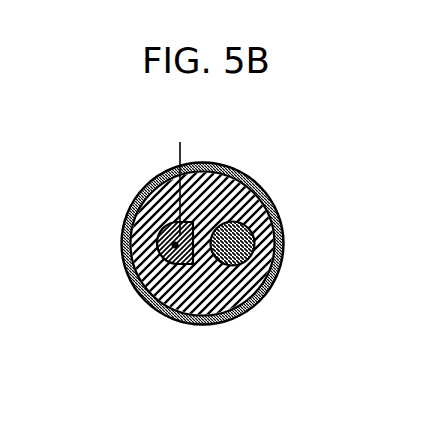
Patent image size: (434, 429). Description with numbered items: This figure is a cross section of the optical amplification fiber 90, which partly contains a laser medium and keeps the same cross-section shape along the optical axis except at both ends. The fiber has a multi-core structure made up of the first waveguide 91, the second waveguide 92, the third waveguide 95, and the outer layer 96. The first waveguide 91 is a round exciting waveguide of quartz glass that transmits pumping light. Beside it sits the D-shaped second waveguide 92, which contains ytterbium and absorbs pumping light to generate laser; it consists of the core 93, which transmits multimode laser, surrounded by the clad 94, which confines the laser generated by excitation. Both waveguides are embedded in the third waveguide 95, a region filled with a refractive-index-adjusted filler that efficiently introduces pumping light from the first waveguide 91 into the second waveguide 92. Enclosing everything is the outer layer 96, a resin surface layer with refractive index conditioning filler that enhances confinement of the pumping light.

The optical amplification fiber 90 is at (127, 295).
The first waveguide 91 is at (255, 246).
The second waveguide 92 is at (175, 245).
The core 93 is at (183, 175).
The clad 94 is at (157, 227).
The third waveguide 95 is at (265, 217).
The outer layer 96 is at (260, 300).